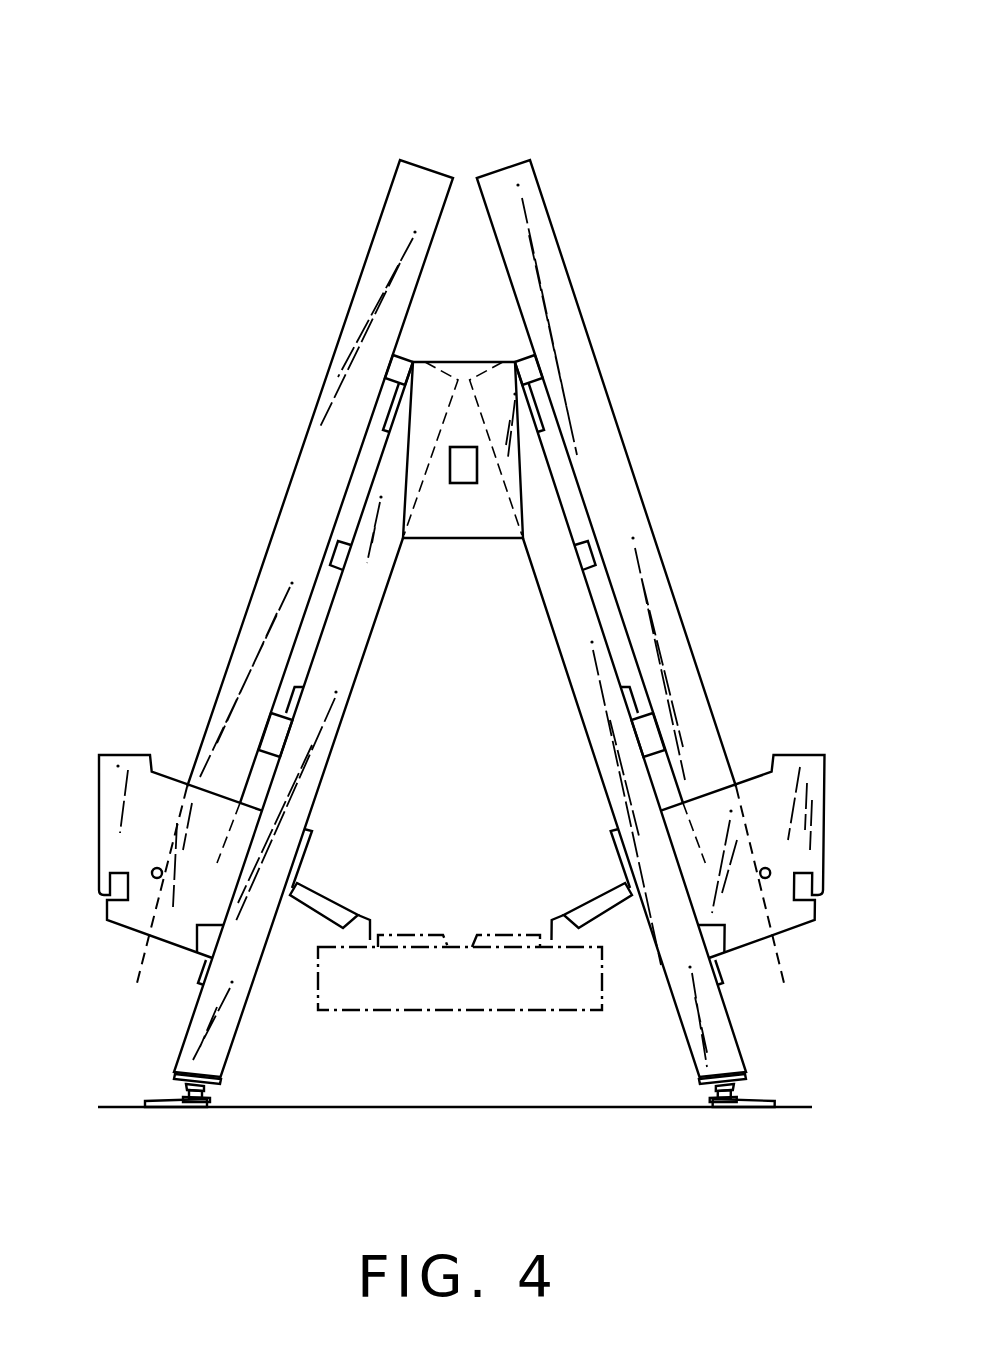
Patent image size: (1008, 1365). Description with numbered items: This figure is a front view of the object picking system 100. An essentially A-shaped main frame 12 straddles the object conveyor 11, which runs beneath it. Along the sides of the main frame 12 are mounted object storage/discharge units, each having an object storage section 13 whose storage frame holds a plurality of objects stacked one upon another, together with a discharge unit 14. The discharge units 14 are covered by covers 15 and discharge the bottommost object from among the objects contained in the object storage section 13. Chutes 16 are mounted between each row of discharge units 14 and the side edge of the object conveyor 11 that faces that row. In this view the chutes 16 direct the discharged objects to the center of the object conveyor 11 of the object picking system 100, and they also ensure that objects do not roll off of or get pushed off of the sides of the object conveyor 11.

The object picking system 100 is at (485, 128).
The object conveyor 11 is at (461, 947).
The main frame 12 is at (563, 642).
The object storage section 13 is at (337, 342).
The discharge unit 14 is at (467, 901).
The cover 15 is at (100, 808).
The chute 16 is at (338, 897).